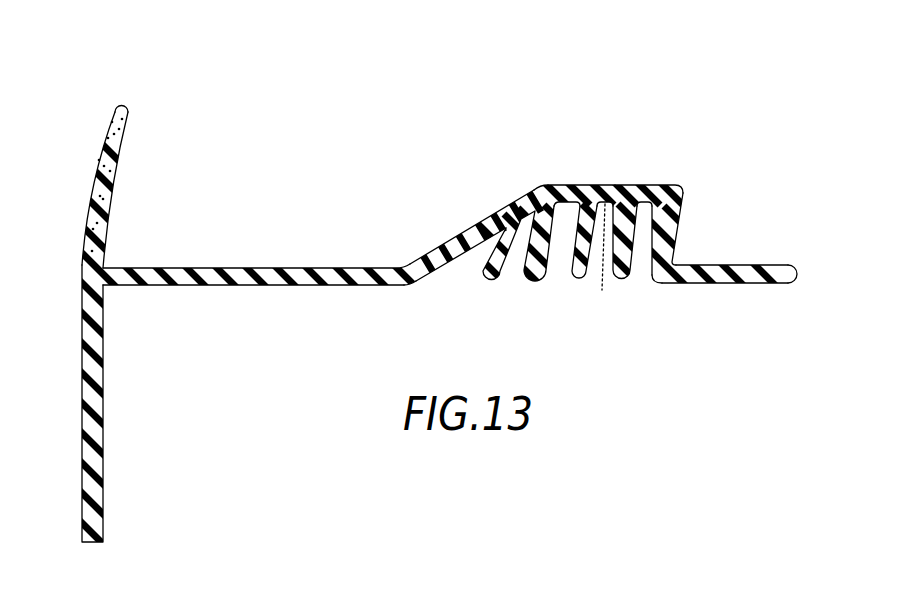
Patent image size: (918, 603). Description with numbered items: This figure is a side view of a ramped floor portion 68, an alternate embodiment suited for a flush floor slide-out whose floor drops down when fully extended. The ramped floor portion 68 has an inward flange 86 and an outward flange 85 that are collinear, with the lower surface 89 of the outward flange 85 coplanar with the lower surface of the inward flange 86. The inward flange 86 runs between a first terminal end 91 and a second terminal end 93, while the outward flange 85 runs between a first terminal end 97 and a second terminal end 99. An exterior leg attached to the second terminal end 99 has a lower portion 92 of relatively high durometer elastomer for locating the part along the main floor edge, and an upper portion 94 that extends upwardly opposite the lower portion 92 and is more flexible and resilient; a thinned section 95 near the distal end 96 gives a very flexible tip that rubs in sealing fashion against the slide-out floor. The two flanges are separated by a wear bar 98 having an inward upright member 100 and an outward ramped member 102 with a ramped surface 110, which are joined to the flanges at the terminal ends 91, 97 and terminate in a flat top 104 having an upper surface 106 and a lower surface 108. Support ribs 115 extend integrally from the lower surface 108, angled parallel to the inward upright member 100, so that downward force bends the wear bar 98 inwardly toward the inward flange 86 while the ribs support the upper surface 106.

The ramped floor portion 68 is at (487, 103).
The outward flange 85 is at (317, 247).
The inward flange 86 is at (720, 247).
The lower surface 89 is at (222, 287).
The first terminal end 91 is at (650, 283).
The lower portion 92 is at (78, 349).
The second terminal end 93 is at (793, 267).
The upper portion 94 is at (100, 138).
The thinned section 95 is at (107, 127).
The distal end 96 is at (125, 112).
The first terminal end 97 is at (418, 282).
The wear bar 98 is at (617, 137).
The second terminal end 99 is at (80, 273).
The inward upright member 100 is at (678, 220).
The outward ramped member 102 is at (447, 240).
The flat top 104 is at (647, 185).
The upper surface 106 is at (570, 185).
The lower surface 108 is at (600, 282).
The ramped surface 110 is at (467, 228).
The support ribs 115 is at (545, 283).